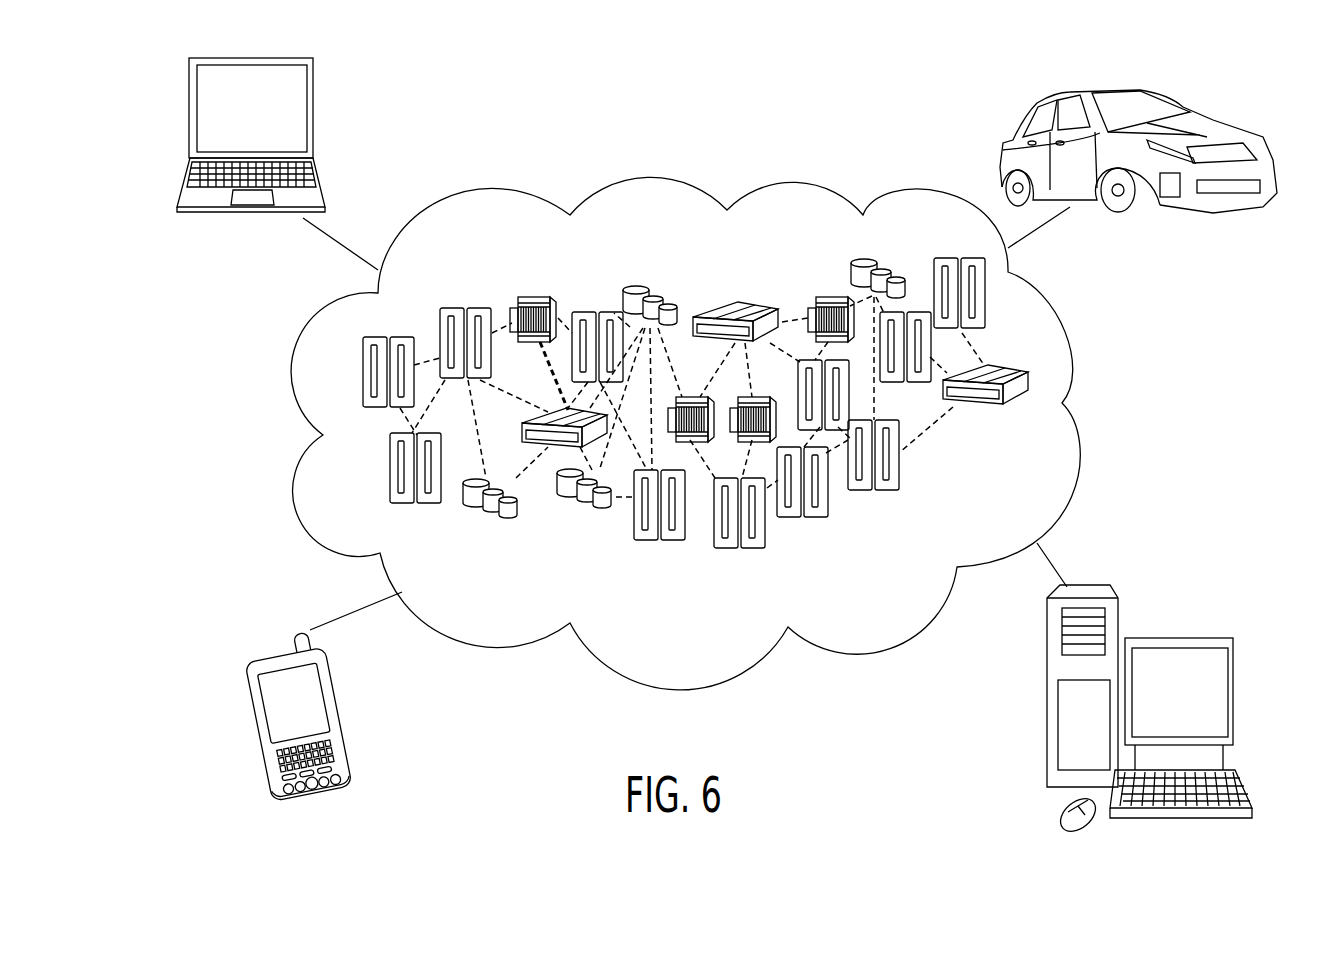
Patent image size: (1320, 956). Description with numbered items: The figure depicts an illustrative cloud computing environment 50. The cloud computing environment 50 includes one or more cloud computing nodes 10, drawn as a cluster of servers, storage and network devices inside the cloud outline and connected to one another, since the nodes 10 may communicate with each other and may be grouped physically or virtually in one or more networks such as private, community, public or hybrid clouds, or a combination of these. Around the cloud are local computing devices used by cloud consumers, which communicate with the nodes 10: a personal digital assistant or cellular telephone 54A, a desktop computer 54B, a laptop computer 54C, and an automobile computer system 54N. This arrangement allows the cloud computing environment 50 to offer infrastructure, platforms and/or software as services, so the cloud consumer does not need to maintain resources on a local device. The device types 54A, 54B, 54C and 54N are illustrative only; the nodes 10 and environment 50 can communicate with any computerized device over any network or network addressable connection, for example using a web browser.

The cloud computing environment 50 is at (1072, 345).
The cloud computing nodes 10 is at (1060, 466).
The personal digital assistant or cellular telephone 54A is at (250, 728).
The desktop computer 54B is at (1170, 638).
The laptop computer 54C is at (190, 114).
The automobile computer system 54N is at (1190, 108).